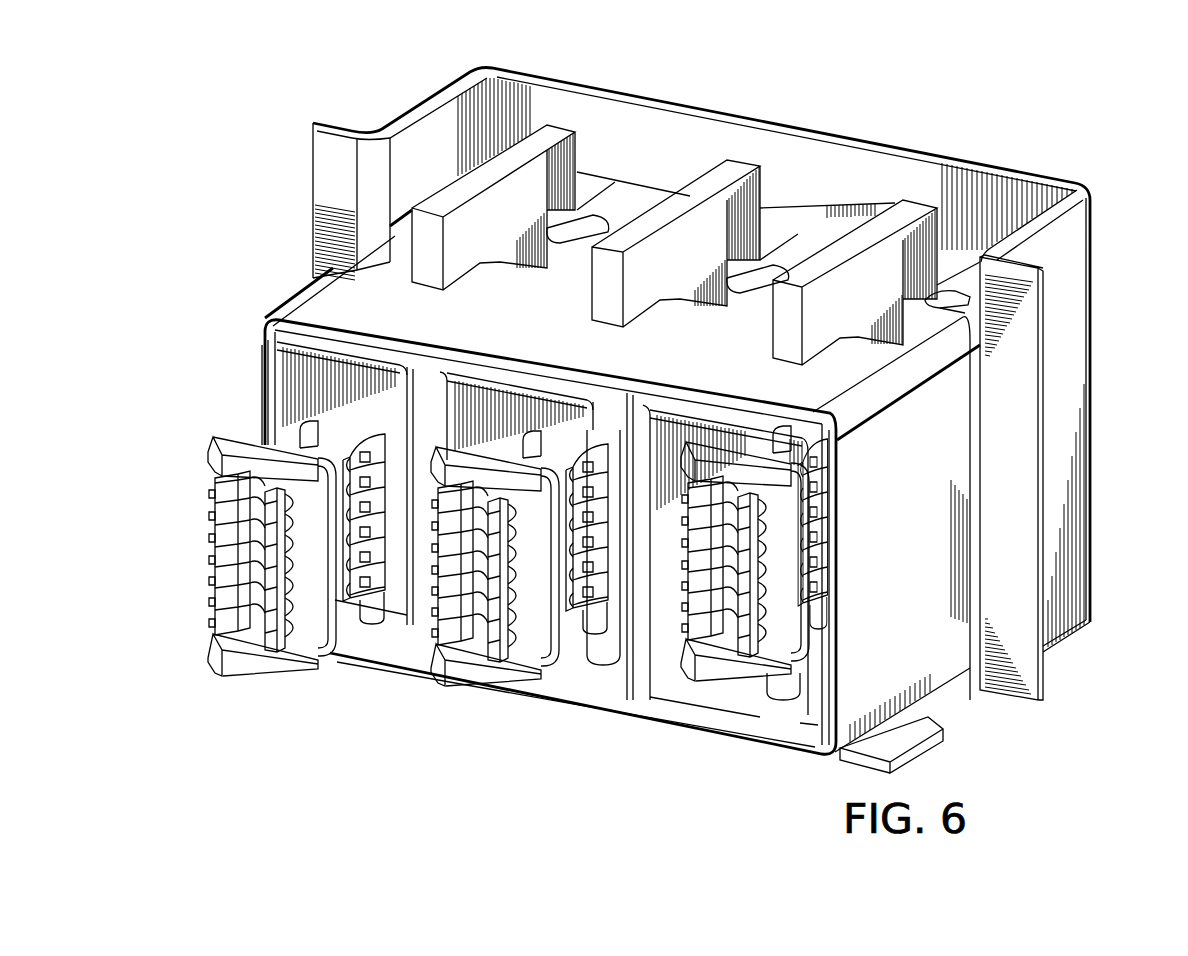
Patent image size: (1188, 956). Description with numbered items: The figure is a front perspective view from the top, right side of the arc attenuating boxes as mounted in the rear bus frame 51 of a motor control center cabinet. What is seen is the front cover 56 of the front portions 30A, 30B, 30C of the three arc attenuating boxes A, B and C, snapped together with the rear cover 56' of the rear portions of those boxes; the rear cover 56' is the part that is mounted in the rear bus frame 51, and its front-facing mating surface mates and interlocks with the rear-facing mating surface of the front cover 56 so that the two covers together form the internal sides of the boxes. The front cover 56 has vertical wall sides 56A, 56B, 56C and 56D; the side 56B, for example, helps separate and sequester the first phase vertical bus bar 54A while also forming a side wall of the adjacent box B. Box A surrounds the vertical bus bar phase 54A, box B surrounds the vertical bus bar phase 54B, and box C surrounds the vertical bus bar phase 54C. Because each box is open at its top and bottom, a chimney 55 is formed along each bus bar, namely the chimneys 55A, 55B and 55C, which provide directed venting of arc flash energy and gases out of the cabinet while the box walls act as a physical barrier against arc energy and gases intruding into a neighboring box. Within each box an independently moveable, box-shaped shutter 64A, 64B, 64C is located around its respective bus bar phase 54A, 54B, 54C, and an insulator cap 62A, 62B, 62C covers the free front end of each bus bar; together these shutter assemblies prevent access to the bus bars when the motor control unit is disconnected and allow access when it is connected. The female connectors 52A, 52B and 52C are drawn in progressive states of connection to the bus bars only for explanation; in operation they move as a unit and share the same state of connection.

The front portion of arc attenuating box A 30A is at (362, 628).
The front portion of arc attenuating box B 30B is at (562, 670).
The front portion of arc attenuating box C 30C is at (727, 705).
The rear bus frame 51 is at (1030, 664).
The female connector 52A is at (240, 660).
The female connector 52B is at (470, 667).
The female connector 52C is at (730, 663).
The first phase vertical bus bar 54A is at (553, 133).
The second phase vertical bus bar 54B is at (735, 168).
The third phase vertical bus bar 54C is at (913, 205).
The chimney 55 is at (972, 288).
The chimney 55A is at (590, 228).
The chimney 55B is at (757, 270).
The chimney 55C is at (940, 300).
The front cover 56 is at (652, 411).
The rear cover 56' is at (1008, 195).
The vertical wall side 56A is at (270, 373).
The vertical wall side 56B is at (453, 407).
The vertical wall side 56C is at (640, 643).
The vertical wall side 56D is at (835, 688).
The insulator cap 62A is at (413, 380).
The insulator cap 62B is at (607, 408).
The insulator cap 62C is at (787, 447).
The box-shaped shutter 64A is at (380, 407).
The box-shaped shutter 64B is at (558, 408).
The box-shaped shutter 64C is at (737, 440).